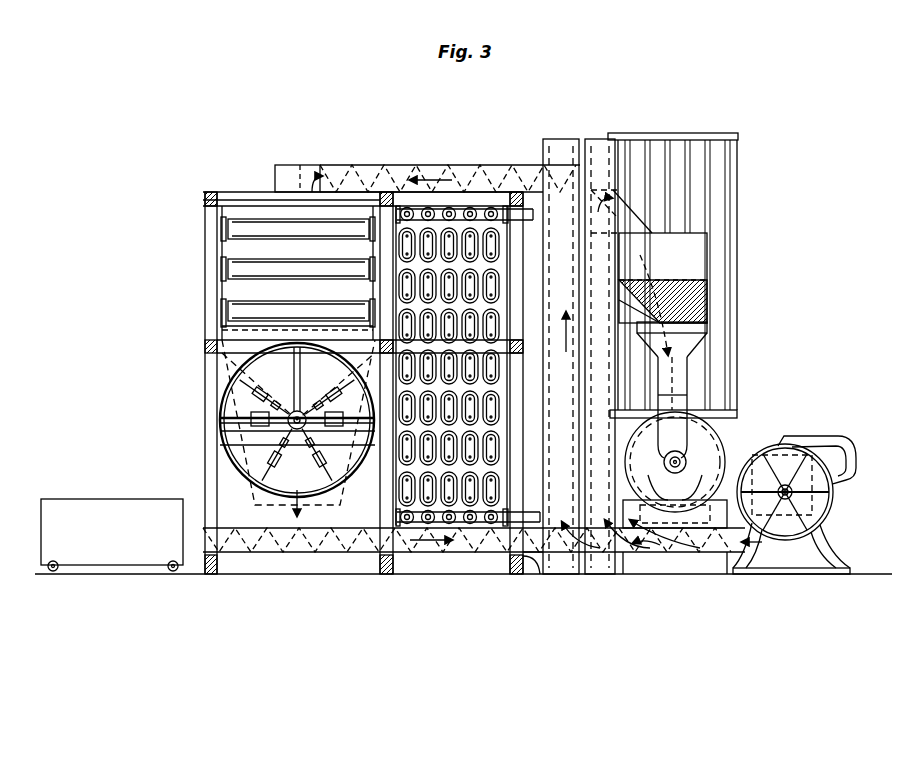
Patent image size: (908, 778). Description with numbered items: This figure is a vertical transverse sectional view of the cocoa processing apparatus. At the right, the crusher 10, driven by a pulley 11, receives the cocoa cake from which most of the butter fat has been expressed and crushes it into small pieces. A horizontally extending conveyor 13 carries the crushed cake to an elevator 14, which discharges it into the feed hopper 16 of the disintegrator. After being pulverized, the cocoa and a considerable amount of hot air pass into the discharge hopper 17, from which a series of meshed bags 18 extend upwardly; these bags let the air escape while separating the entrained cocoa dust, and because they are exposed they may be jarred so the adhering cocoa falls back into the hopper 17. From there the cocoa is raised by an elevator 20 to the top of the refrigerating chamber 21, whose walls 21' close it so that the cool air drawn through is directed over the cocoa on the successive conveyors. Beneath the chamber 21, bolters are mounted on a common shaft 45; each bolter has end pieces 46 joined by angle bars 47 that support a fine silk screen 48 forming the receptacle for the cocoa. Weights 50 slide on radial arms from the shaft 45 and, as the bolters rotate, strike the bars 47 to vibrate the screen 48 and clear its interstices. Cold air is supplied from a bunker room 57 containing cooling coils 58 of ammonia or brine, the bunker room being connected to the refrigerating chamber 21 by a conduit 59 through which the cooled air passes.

The crusher 10 is at (824, 443).
The pulley 11 is at (834, 490).
The conveyor 13 is at (672, 548).
The elevator 14 is at (600, 150).
The feed hopper 16 is at (703, 272).
The discharge hopper 17 is at (724, 433).
The meshed bags 18 is at (723, 176).
The elevator 20 is at (508, 176).
The refrigerating chamber 21 is at (474, 371).
The walls 21' is at (549, 330).
The common shaft 45 is at (290, 424).
The end pieces 46 is at (246, 387).
The angle bars 47 is at (258, 370).
The screen 48 is at (226, 407).
The weights 50 is at (337, 413).
The bunker room 57 is at (512, 500).
The cooling coils 58 is at (412, 235).
The conduit 59 is at (300, 398).